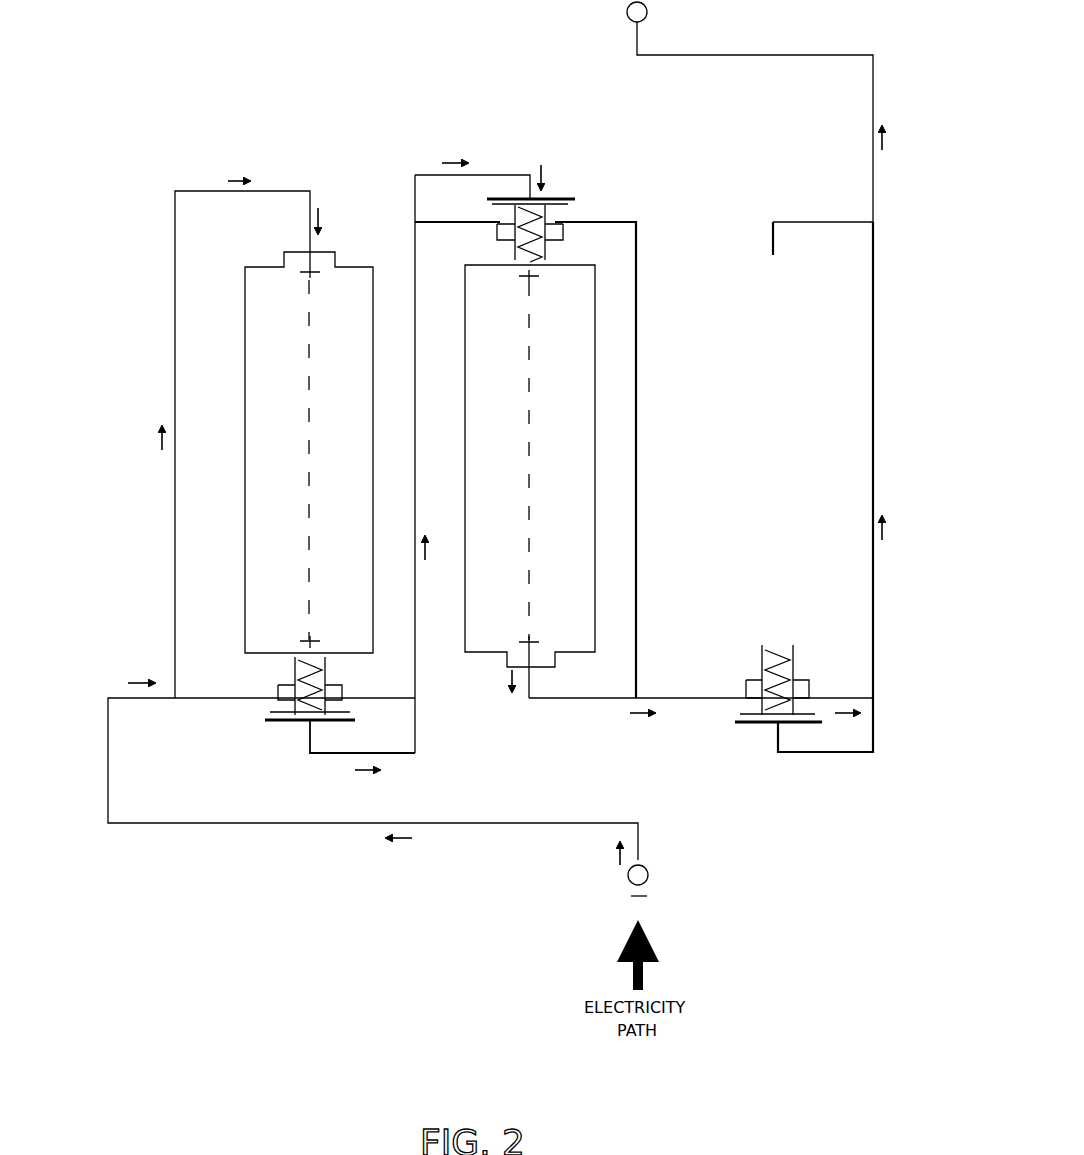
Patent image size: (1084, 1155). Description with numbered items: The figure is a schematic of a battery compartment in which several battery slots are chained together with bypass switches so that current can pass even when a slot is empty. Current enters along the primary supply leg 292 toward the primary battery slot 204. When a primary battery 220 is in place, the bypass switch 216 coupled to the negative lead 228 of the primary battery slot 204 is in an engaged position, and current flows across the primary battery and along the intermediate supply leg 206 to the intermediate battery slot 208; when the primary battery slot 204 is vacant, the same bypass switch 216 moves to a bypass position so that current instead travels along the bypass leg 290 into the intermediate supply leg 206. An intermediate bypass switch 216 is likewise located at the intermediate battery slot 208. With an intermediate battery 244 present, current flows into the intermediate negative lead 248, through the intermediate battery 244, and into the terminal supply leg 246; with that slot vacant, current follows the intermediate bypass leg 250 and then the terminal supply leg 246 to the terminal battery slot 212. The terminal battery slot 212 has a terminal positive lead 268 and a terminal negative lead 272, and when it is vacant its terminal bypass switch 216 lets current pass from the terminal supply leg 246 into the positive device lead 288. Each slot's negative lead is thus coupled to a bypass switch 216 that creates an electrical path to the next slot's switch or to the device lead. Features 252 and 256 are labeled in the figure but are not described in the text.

The primary battery slot 204 is at (230, 440).
The intermediate supply leg 206 is at (413, 285).
The intermediate battery slot 208 is at (516, 152).
The terminal battery slot 212 is at (794, 377).
The bypass switch 216 is at (524, 461).
The primary battery 220 is at (325, 446).
The negative lead 228 is at (298, 665).
The intermediate battery 244 is at (549, 494).
The terminal supply leg 246 is at (672, 700).
The intermediate negative lead 248 is at (545, 255).
The intermediate bypass leg 250 is at (636, 458).
The spring 252 is at (545, 245).
The cell outlet 256 is at (508, 658).
The terminal positive lead 268 is at (780, 238).
The terminal negative lead 272 is at (795, 650).
The positive device lead 288 is at (872, 117).
The bypass leg 290 is at (207, 700).
The primary supply leg 292 is at (175, 493).